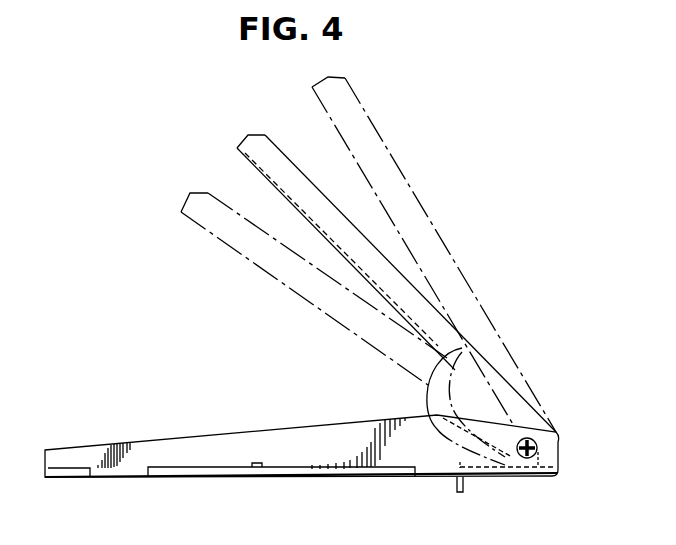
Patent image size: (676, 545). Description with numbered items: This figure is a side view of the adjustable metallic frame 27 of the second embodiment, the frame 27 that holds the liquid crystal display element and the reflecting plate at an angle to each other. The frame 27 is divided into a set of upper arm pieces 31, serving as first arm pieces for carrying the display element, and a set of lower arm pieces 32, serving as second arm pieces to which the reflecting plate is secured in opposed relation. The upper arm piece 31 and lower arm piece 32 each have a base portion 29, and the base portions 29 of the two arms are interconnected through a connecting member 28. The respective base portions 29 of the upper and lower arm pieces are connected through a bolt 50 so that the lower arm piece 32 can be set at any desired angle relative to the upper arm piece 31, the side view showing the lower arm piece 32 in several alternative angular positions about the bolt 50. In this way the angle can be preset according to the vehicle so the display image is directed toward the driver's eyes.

The metallic frame 27 is at (506, 293).
The connecting member 28 is at (530, 468).
The base portion 29 is at (523, 427).
The upper arm piece 31 is at (350, 228).
The lower arm piece 32 is at (231, 466).
The bolt 50 is at (538, 453).